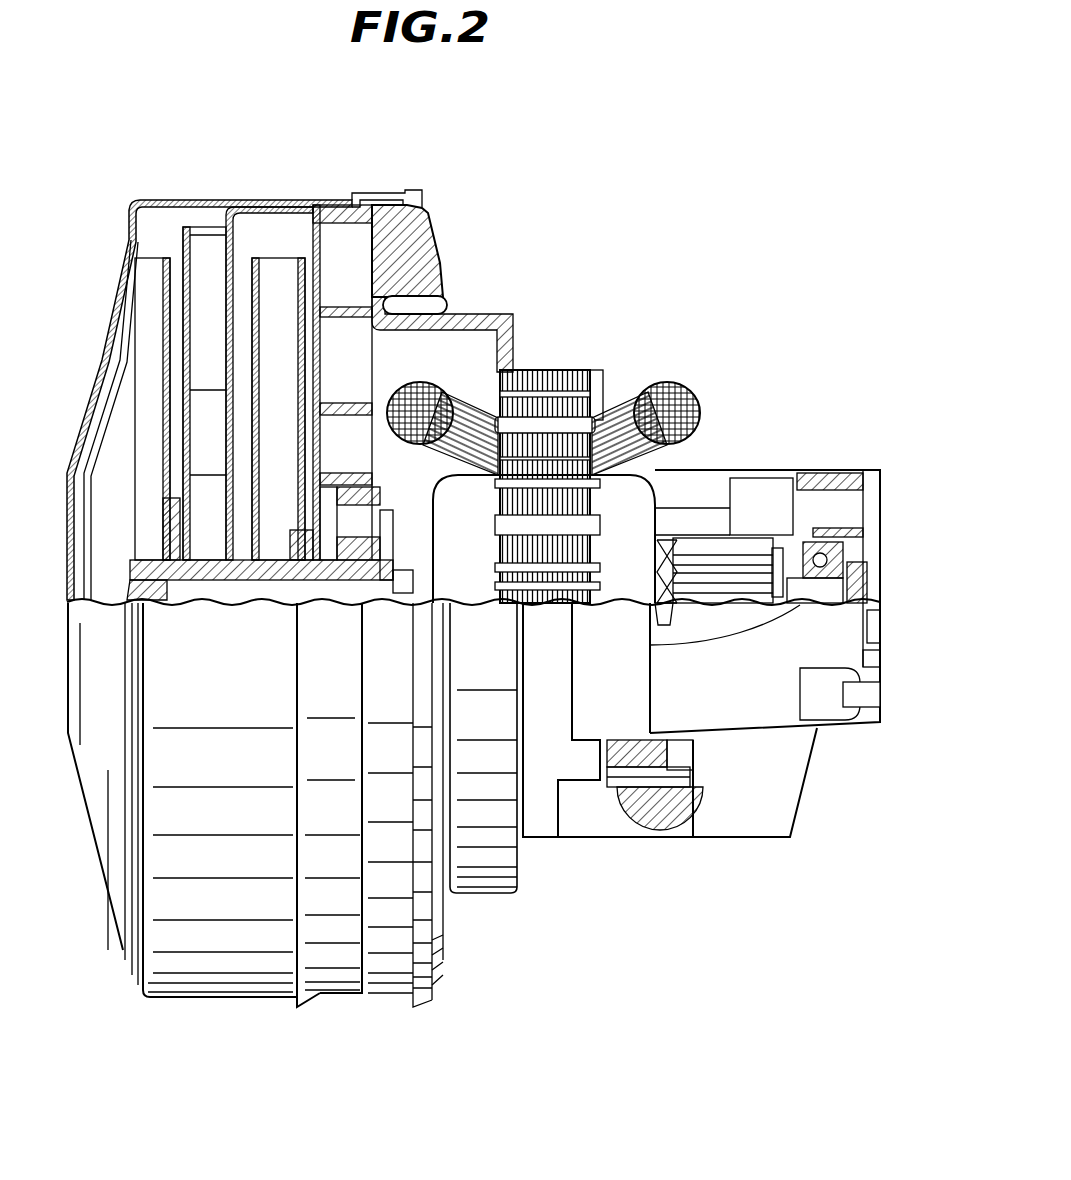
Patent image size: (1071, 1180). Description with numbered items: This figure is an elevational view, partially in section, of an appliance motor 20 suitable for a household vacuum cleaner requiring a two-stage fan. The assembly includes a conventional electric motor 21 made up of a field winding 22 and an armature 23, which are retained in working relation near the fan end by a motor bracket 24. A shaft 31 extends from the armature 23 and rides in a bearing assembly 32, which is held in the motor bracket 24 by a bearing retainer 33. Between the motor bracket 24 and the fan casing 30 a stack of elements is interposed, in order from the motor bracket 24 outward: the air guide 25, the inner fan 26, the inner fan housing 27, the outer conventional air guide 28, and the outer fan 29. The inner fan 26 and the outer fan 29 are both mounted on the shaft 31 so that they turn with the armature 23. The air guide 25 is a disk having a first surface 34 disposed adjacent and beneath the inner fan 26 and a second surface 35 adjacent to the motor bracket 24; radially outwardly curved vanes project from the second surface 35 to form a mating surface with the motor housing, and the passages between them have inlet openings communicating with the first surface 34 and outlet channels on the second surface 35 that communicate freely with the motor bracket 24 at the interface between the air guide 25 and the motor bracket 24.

The appliance motor 20 is at (580, 208).
The electric motor 21 is at (773, 317).
The field winding 22 is at (561, 365).
The armature 23 is at (708, 538).
The motor bracket 24 is at (428, 212).
The air guide 25 is at (340, 298).
The inner fan 26 is at (272, 256).
The inner fan housing 27 is at (303, 193).
The outer conventional air guide 28 is at (197, 230).
The outer fan 29 is at (147, 254).
The fan casing 30 is at (112, 912).
The shaft 31 is at (334, 590).
The bearing assembly 32 is at (378, 578).
The bearing retainer 33 is at (372, 530).
The first surface 34 is at (312, 238).
The second surface 35 is at (320, 362).